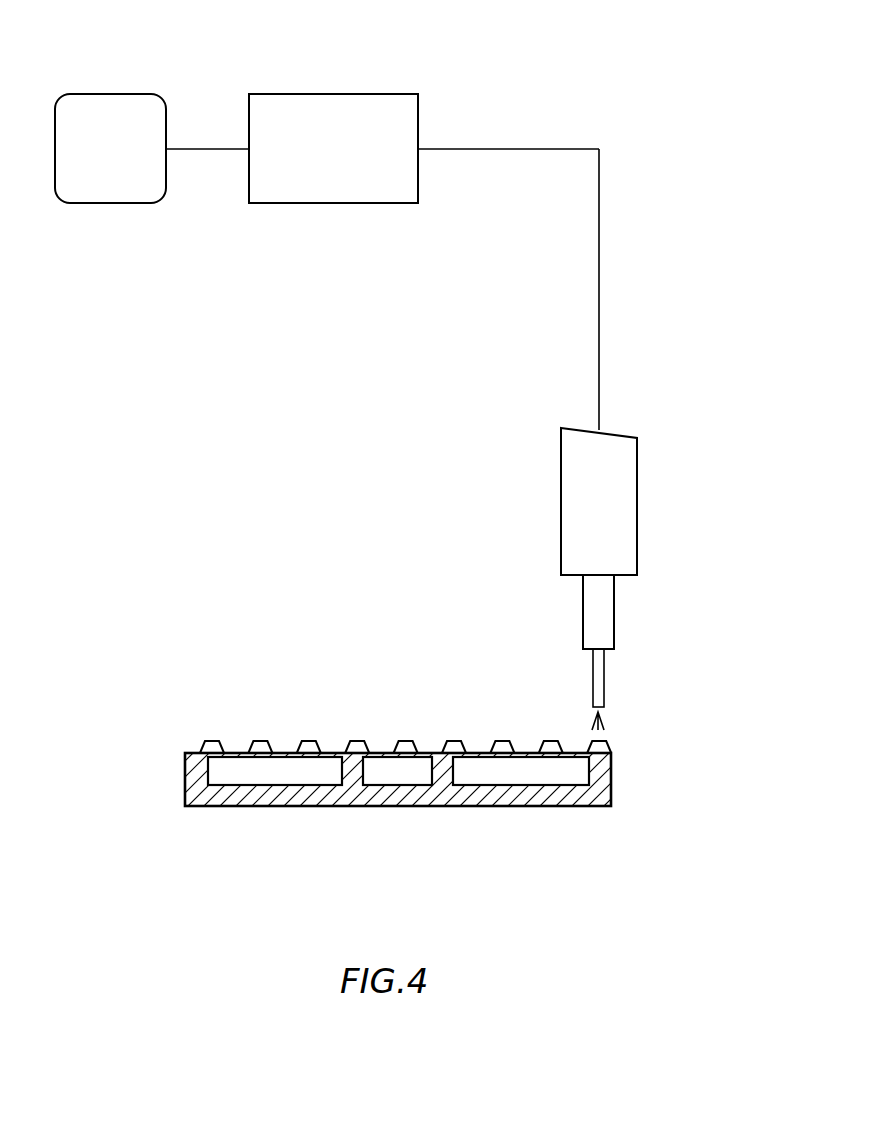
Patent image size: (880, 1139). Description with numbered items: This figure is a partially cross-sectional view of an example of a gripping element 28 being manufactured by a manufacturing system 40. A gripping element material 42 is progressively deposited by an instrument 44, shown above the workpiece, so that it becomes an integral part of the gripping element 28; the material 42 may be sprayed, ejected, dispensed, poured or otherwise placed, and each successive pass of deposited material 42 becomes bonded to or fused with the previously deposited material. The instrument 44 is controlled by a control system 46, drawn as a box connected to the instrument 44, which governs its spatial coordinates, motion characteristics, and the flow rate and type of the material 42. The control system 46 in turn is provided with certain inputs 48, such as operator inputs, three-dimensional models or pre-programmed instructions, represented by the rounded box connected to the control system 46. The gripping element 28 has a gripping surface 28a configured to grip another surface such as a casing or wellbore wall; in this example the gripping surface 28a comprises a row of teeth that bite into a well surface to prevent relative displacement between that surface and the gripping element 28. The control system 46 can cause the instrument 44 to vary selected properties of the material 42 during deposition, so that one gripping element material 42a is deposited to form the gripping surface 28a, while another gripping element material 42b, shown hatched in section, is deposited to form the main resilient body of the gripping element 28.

The coating system 40 is at (688, 88).
The gripping element material 42 is at (605, 722).
The gripping element material 42a is at (212, 748).
The gripping element material 42b is at (245, 795).
The instrument 44 is at (637, 471).
The control system 46 is at (370, 94).
The inputs 48 is at (123, 94).
The gripping element 28 is at (348, 807).
The gripping surface 28a is at (404, 740).